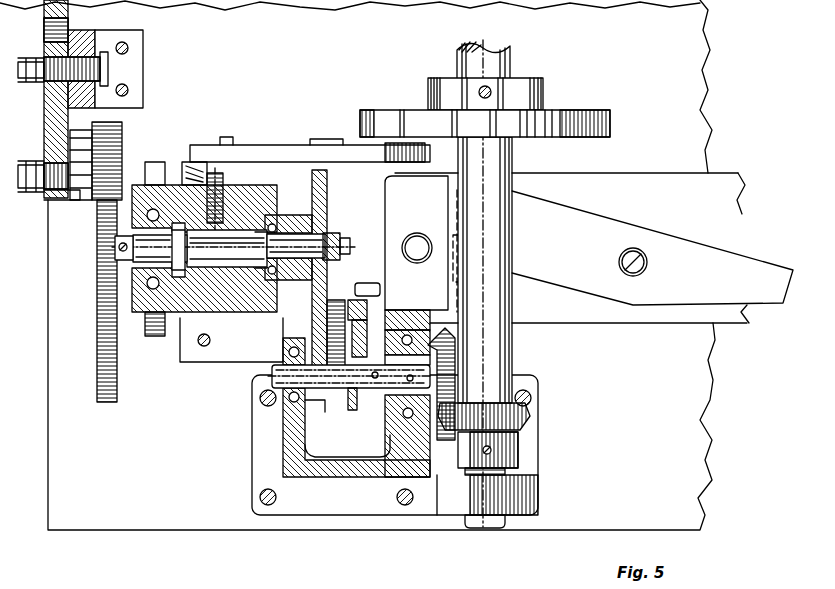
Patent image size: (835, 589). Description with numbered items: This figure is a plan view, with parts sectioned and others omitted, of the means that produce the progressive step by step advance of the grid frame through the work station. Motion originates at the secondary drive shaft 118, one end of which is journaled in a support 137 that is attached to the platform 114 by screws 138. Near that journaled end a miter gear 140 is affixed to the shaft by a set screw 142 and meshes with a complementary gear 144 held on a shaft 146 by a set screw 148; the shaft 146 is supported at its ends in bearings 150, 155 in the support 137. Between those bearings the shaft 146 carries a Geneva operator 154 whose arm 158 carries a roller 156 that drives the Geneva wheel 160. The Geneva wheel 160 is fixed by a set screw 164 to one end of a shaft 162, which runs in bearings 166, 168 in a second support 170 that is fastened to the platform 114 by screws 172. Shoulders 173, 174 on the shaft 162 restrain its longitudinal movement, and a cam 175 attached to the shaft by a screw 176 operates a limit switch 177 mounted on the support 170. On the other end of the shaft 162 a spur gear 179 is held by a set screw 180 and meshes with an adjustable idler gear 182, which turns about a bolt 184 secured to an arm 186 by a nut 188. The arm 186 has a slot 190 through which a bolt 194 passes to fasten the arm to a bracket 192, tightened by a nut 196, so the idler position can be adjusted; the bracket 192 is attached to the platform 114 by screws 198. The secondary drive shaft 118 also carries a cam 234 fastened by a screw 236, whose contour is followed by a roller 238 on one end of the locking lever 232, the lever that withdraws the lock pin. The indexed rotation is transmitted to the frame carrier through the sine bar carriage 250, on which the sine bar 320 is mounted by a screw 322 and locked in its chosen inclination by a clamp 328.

The platform 114 is at (357, 265).
The secondary drive shaft 118 is at (511, 48).
The support 137 is at (372, 462).
The screws 138 is at (276, 499).
The miter gear 140 is at (512, 447).
The set screw 142 is at (485, 455).
The complementary gear 144 is at (409, 375).
The shaft 146 is at (326, 372).
The set screw 148 is at (356, 394).
The bearing 150 is at (283, 352).
The Geneva operator 154 is at (386, 384).
The bearing 155 is at (392, 405).
The roller 156 is at (330, 322).
The arm 158 is at (372, 330).
The Geneva wheel 160 is at (322, 200).
The shaft 162 is at (233, 248).
The set screw 164 is at (300, 248).
The bearing 166 is at (178, 308).
The bearing 168 is at (244, 251).
The support 170 is at (140, 314).
The screws 172 is at (204, 347).
The shoulder 173 is at (194, 252).
The shoulder 174 is at (262, 266).
The cam 175 is at (338, 262).
The screw 176 is at (346, 244).
The limit switch 177 is at (372, 283).
The spur gear 179 is at (106, 403).
The set screw 180 is at (116, 248).
The idler gear 182 is at (120, 133).
The bolt 184 is at (26, 192).
The arm 186 is at (45, 114).
The nut 188 is at (40, 160).
The slot 190 is at (54, 31).
The bracket 192 is at (107, 30).
The bolt 194 is at (108, 73).
The nut 196 is at (40, 58).
The screws 198 is at (128, 50).
The locking lever 232 is at (262, 137).
The cam 234 is at (502, 120).
The screw 236 is at (491, 88).
The roller 238 is at (398, 118).
The sine bar carriage 250 is at (572, 248).
The sine bar 320 is at (628, 212).
The screw 322 is at (618, 262).
The clamp 328 is at (455, 240).